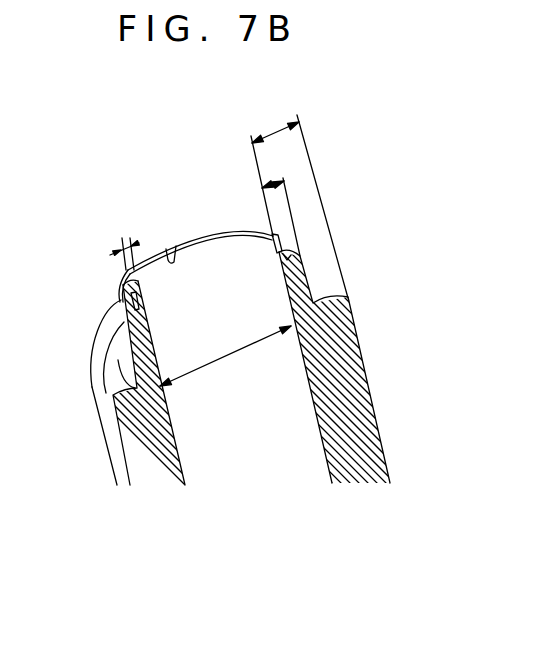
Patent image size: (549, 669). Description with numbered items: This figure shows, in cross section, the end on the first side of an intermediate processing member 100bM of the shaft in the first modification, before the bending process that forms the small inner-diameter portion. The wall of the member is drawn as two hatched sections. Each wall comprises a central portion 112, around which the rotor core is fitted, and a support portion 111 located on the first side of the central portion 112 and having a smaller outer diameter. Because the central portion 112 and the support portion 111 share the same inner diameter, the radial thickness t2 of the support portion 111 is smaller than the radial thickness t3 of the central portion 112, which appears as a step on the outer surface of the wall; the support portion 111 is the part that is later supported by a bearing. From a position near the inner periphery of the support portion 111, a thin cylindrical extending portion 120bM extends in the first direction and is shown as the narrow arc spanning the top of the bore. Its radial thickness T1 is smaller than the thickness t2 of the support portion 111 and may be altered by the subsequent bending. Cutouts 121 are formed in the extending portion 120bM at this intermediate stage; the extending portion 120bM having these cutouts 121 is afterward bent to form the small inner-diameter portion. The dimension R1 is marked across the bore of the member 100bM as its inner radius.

The intermediate processing member 100bM is at (90, 133).
The extending portion 120bM is at (193, 242).
The cutouts 121 is at (166, 245).
The support portion 111 is at (120, 333).
The central portion 112 is at (102, 408).
The radial thickness of the extending portion T1 is at (123, 243).
The inner radius R1 is at (225, 356).
The radial thickness of the support portion t2 is at (280, 209).
The radial thickness of the central portion t3 is at (299, 204).